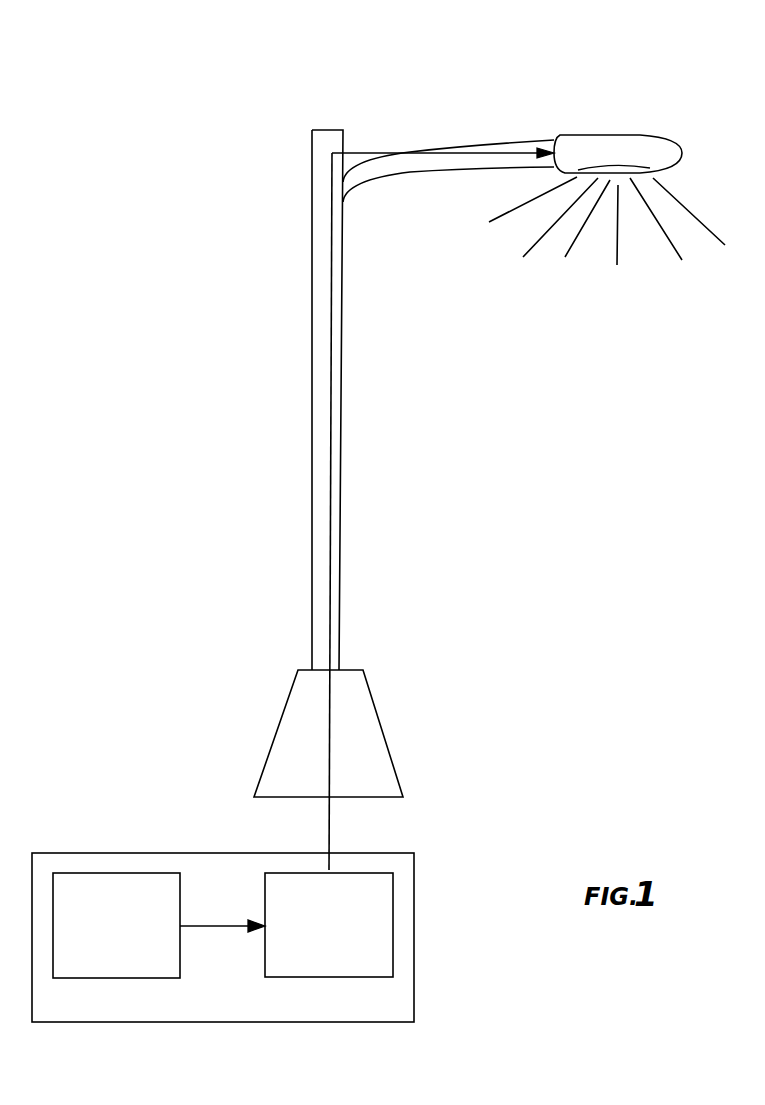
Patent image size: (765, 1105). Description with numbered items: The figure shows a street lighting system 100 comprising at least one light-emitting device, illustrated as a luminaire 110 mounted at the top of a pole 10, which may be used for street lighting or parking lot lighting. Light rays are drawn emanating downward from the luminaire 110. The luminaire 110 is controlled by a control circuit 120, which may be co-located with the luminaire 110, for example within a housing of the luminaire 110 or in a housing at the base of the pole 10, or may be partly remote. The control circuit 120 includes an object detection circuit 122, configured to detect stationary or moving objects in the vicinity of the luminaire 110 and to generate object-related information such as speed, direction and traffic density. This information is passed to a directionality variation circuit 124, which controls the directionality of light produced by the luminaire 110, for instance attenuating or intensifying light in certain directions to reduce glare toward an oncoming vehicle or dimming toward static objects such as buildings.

The lighting system 100 is at (643, 49).
The pole 10 is at (331, 130).
The luminaire 110 is at (633, 135).
The control circuit 120 is at (225, 1022).
The object detection circuit 122 is at (117, 978).
The directionality variation circuit 124 is at (328, 978).